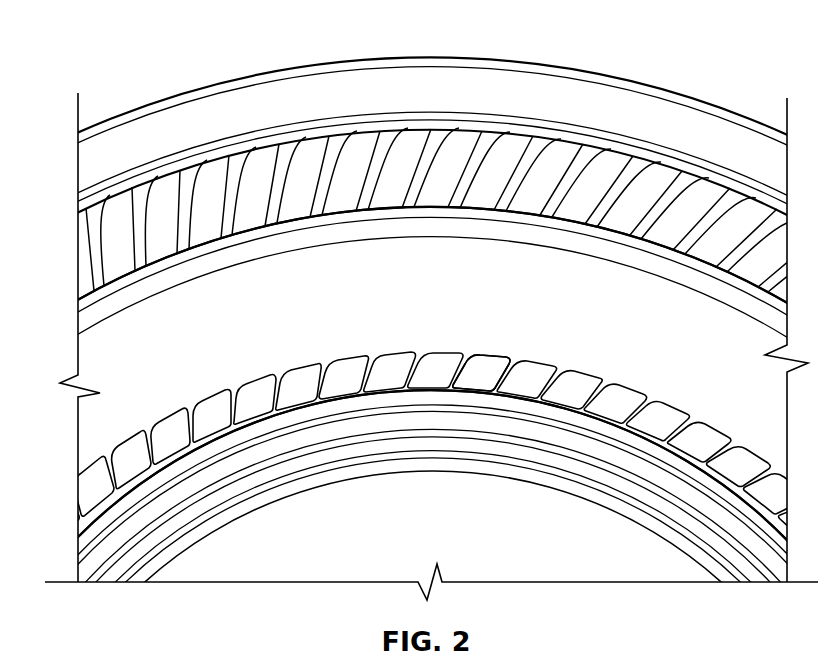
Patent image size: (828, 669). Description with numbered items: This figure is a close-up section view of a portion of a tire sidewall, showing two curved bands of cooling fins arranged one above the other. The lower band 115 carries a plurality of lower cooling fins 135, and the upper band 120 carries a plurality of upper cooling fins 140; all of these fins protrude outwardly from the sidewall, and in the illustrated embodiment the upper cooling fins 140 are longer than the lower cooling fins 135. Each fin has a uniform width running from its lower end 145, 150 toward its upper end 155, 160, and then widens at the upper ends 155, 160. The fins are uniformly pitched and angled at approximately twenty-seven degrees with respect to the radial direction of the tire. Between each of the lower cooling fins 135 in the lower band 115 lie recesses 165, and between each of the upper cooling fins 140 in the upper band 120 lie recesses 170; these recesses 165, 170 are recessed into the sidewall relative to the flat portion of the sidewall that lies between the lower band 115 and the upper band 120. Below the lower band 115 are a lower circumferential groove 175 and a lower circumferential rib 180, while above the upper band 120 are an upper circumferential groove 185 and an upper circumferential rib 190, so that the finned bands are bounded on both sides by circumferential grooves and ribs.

The lower band 115 is at (159, 420).
The upper band 120 is at (116, 224).
The lower cooling fins 135 is at (189, 422).
The upper cooling fins 140 is at (228, 194).
The lower ends of lower cooling fins 145 is at (452, 400).
The lower ends of upper cooling fins 150 is at (502, 215).
The upper ends of lower cooling fins 155 is at (481, 346).
The upper ends of upper cooling fins 160 is at (488, 134).
The recesses of lower band 165 is at (214, 432).
The recesses of upper band 170 is at (249, 223).
The lower circumferential groove 175 is at (589, 433).
The lower circumferential rib 180 is at (647, 465).
The upper circumferential groove 185 is at (644, 143).
The upper circumferential rib 190 is at (718, 149).